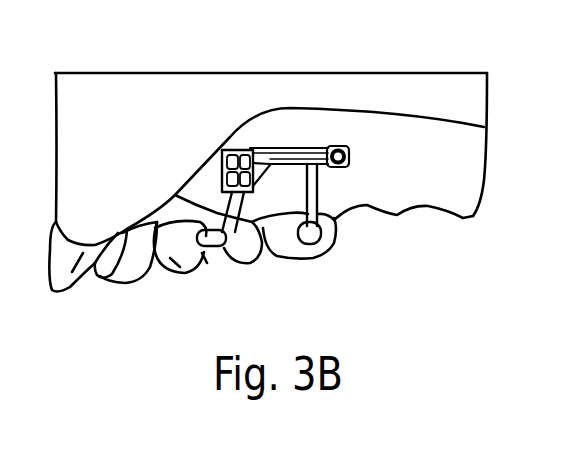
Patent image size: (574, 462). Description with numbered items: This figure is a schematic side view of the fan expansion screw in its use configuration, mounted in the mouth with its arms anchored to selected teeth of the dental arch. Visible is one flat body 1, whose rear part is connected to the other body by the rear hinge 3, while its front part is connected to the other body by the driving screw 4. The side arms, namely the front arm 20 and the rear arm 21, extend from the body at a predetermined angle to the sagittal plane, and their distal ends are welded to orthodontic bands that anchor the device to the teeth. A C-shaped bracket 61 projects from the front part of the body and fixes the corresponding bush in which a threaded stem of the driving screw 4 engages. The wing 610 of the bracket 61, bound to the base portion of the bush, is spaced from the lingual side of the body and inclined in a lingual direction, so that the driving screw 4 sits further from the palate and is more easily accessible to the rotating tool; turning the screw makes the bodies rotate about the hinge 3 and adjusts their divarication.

The flat body 1 is at (299, 140).
The rear hinge 3 is at (338, 178).
The driving screw 4 is at (218, 174).
The "C"-shaped bracket 61 is at (244, 142).
The wing 610 is at (221, 207).
The front side arm 20 is at (224, 242).
The rear side arm 21 is at (308, 232).